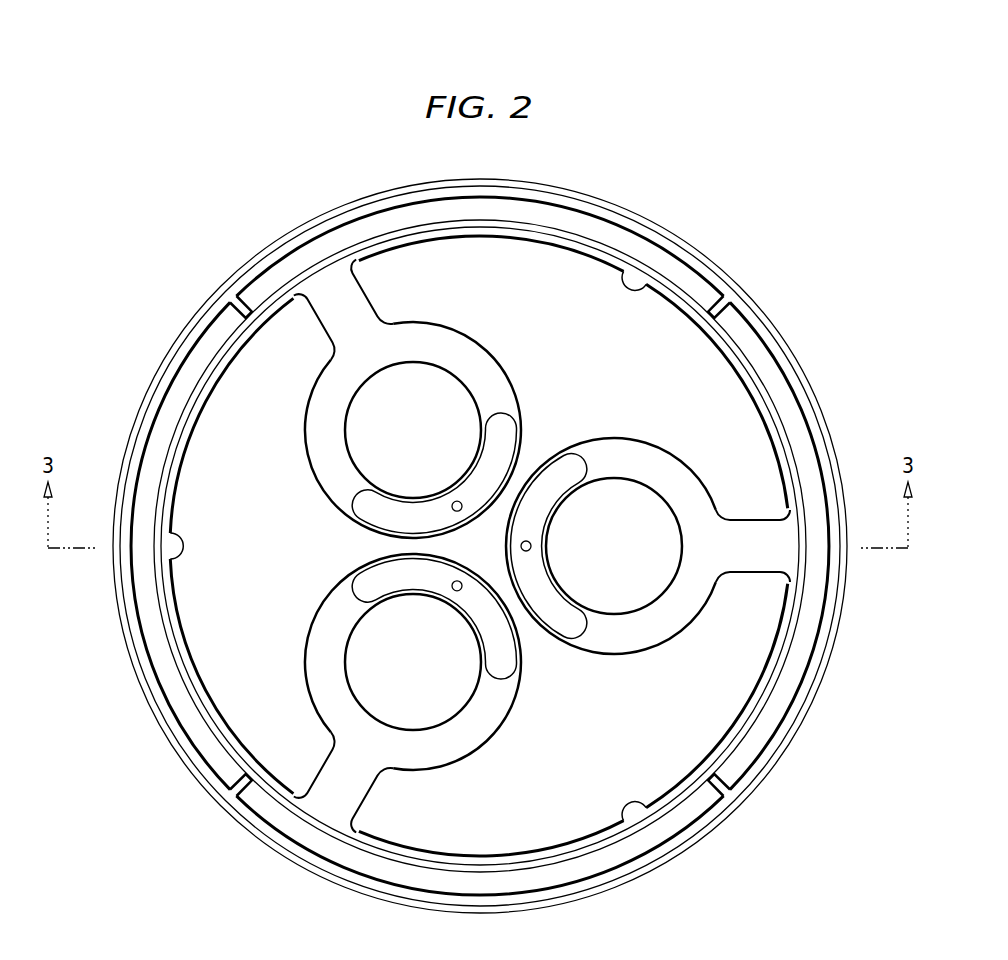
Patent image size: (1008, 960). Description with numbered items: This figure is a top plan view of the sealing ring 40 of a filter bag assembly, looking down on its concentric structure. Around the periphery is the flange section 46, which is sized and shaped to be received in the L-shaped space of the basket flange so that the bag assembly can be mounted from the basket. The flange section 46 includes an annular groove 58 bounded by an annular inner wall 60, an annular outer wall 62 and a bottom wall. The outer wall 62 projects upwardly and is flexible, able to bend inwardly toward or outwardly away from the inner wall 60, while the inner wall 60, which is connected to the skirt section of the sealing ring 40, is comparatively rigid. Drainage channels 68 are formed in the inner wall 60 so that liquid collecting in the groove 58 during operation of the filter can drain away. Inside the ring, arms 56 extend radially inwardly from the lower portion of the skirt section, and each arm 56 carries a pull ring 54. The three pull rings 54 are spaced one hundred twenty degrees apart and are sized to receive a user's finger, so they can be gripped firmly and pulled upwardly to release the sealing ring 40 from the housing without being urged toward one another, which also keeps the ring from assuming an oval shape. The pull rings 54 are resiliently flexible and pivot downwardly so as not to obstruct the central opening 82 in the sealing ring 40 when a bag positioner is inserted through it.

The sealing ring 40 is at (215, 264).
The flange section 46 is at (134, 704).
The pull rings 54 is at (478, 365).
The arms 56 is at (350, 308).
The annular groove 58 is at (280, 840).
The annular inner wall 60 is at (800, 433).
The annular outer wall 62 is at (725, 271).
The drainage channels 68 is at (238, 314).
The opening 82 is at (657, 783).